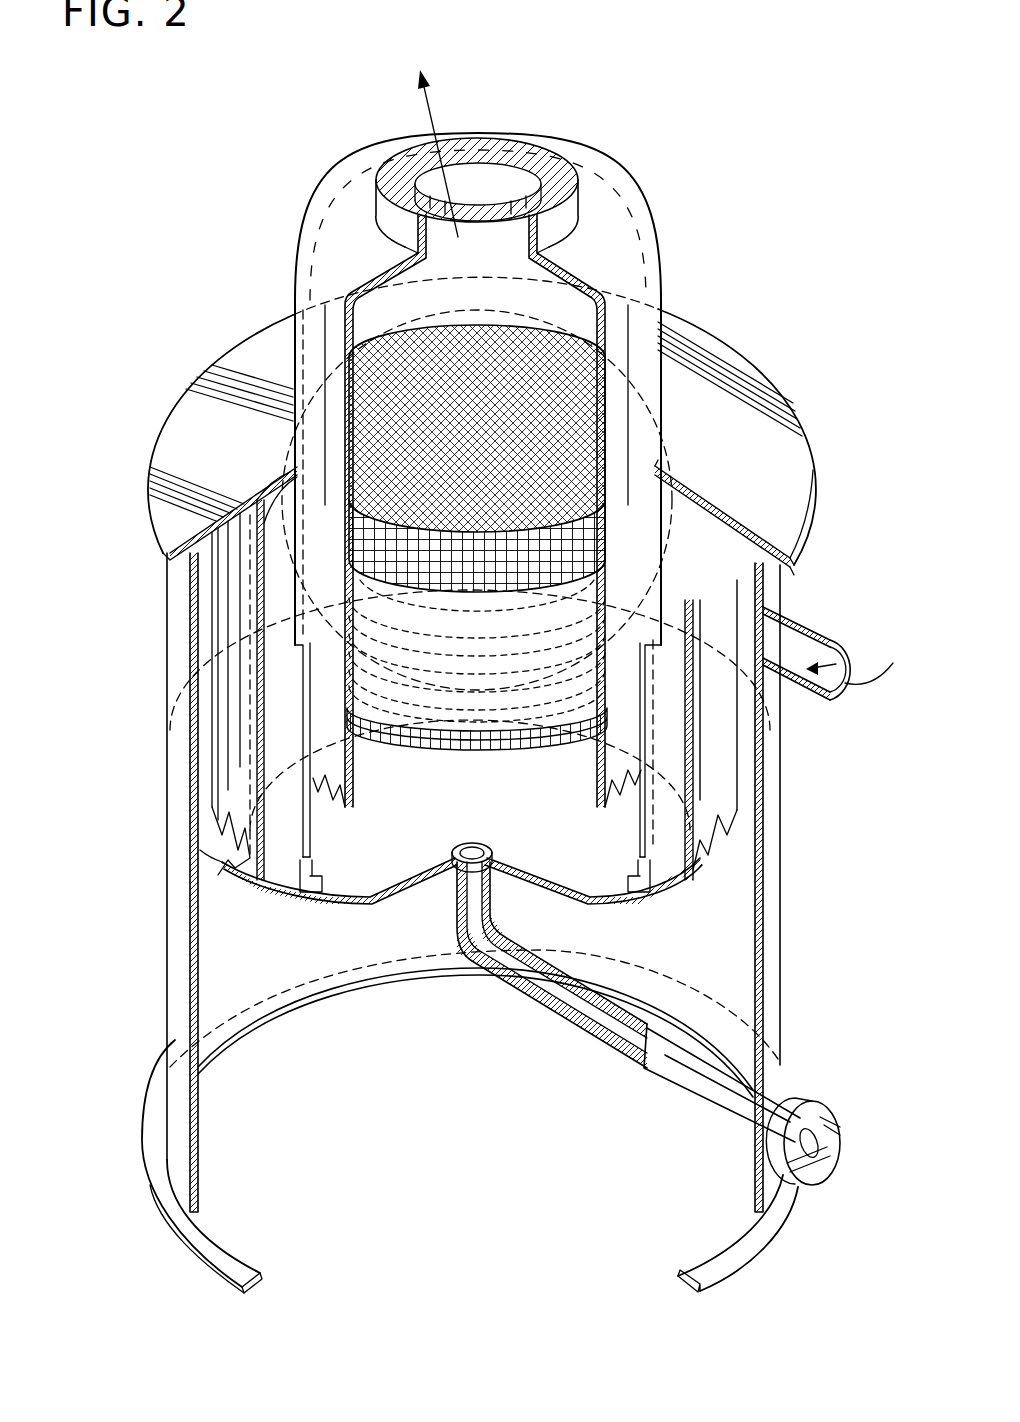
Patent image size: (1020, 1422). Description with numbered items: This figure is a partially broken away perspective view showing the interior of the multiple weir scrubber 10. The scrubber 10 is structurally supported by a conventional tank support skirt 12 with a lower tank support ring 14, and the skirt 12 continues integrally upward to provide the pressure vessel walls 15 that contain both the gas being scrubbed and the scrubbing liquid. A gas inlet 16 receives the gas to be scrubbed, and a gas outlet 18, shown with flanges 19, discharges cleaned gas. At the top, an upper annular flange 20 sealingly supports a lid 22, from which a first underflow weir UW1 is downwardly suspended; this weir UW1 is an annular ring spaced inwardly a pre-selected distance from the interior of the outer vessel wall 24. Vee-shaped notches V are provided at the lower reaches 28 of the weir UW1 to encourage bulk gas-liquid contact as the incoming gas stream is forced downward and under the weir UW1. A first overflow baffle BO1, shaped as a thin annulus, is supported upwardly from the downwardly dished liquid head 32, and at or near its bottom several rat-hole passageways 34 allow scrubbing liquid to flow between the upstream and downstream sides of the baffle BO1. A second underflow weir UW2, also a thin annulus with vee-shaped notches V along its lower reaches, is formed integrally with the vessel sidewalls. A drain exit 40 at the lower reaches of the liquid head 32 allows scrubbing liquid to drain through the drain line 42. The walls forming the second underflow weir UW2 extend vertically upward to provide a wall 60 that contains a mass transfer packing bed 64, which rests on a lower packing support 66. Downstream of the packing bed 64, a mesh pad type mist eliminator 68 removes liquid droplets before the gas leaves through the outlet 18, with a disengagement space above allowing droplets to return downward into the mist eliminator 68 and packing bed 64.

The multiple weir scrubber 10 is at (728, 235).
The tank support skirt 12 is at (765, 1182).
The lower tank support ring 14 is at (740, 1250).
The pressure vessel walls 15 is at (188, 628).
The gas inlet 16 is at (830, 636).
The gas outlet 18 is at (505, 182).
The flanges 19 is at (547, 170).
The annular flange 20 is at (790, 566).
The lid 22 is at (482, 438).
The outer vessel wall 24 is at (215, 807).
The lower reaches of weir 28 is at (200, 856).
The liquid head 32 is at (418, 890).
The rat-hole passageways 34 is at (340, 890).
The drain exit 40 is at (484, 857).
The drain line 42 is at (573, 1017).
The wall 60 is at (342, 338).
The mass transfer packing bed 64 is at (588, 600).
The lower packing support 66 is at (428, 742).
The mist eliminator 68 is at (600, 320).
The first underflow weir UW1 is at (278, 895).
The second underflow weir UW2 is at (347, 800).
The first overflow baffle BO1 is at (313, 838).
The vee-shaped notches V is at (207, 838).